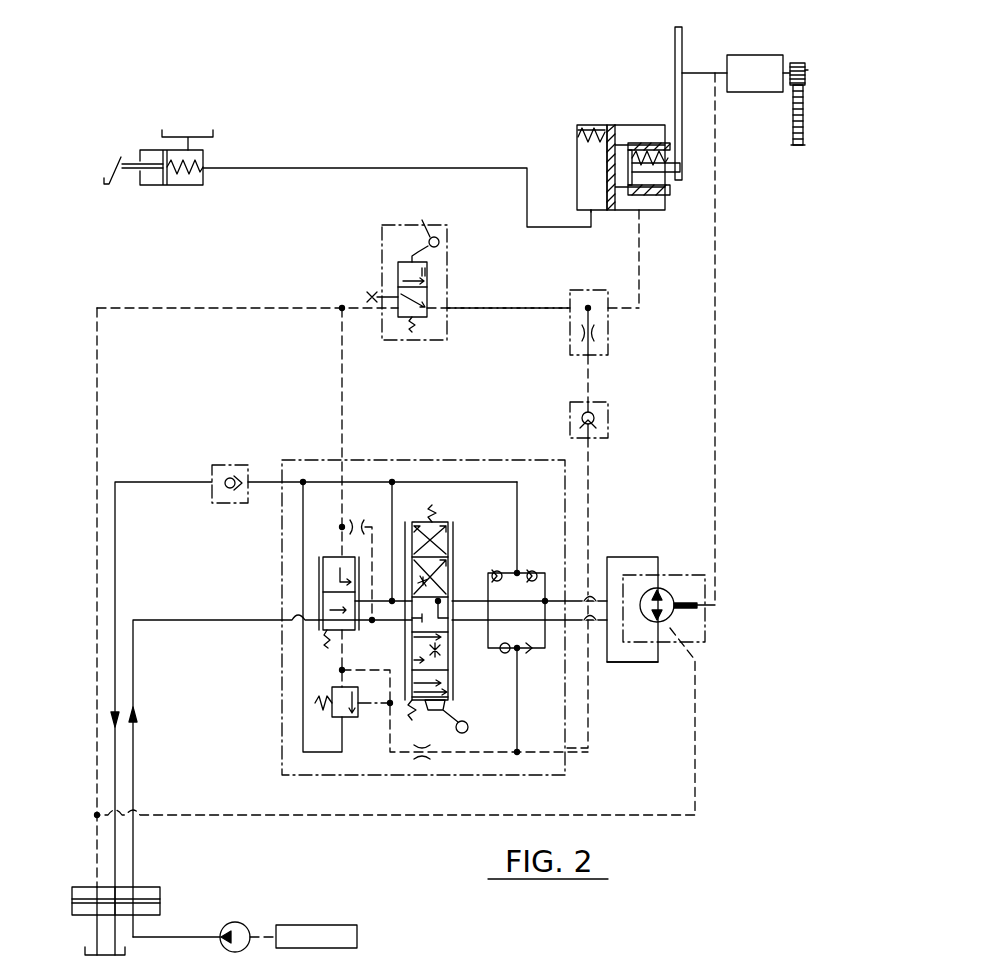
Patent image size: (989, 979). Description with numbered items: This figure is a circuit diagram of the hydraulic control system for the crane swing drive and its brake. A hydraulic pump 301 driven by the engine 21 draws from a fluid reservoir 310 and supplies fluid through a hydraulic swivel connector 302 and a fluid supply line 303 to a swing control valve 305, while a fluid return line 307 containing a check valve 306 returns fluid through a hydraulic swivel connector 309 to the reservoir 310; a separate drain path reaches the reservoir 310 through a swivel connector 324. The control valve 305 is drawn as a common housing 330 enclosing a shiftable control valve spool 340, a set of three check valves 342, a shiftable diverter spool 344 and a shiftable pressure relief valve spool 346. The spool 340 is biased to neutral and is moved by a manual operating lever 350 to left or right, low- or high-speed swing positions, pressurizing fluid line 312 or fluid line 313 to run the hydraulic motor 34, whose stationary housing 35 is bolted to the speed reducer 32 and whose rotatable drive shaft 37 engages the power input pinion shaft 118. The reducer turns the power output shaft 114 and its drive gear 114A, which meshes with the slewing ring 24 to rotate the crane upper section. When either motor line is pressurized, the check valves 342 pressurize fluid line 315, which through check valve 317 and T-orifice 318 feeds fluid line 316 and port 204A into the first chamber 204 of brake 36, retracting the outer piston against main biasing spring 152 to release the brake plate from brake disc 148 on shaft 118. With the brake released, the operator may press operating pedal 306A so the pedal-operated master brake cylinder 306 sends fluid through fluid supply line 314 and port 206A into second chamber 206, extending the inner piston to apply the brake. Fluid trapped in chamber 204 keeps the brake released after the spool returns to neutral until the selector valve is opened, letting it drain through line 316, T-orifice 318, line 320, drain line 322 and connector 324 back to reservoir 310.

The operating pedal 306A is at (116, 162).
The pedal-operated master brake cylinder 306 is at (205, 157).
The fluid supply line 314 is at (351, 166).
The second chamber 206 is at (580, 155).
The brake 36 is at (590, 125).
The main biasing spring 152 is at (580, 136).
The first chamber 204 is at (640, 132).
The brake disc 148 is at (676, 86).
The power input pinion shaft 118 is at (697, 72).
The speed reducer 32 is at (748, 55).
The power output shaft 114 is at (792, 62).
The drive gear 114A is at (808, 68).
The slewing ring 24 is at (805, 116).
The port 206A is at (593, 212).
The port 204A is at (640, 212).
The drain line 322 is at (262, 308).
The line 320 is at (550, 308).
The fluid line 316 is at (608, 308).
The T-orifice 318 is at (608, 339).
The fluid line 315 is at (595, 380).
The check valve 317 is at (608, 418).
The common housing 330 is at (503, 442).
The fluid return line 307 is at (115, 585).
The fluid supply line 303 is at (135, 742).
The shiftable diverter spool 344 is at (350, 632).
The shiftable pressure relief valve spool 346 is at (347, 718).
The shiftable control valve spool 340 is at (456, 548).
The manual operating lever 350 is at (467, 724).
The set of three check valves 342 is at (527, 568).
The fluid line 312 is at (620, 557).
The hydraulic motor 34 is at (705, 640).
The stationary housing 35 is at (666, 590).
The rotatable drive shaft 37 is at (700, 612).
The fluid line 313 is at (625, 663).
The swing control valve 305 is at (566, 773).
The hydraulic swivel connector 302 is at (138, 898).
The swivel connector 324 is at (93, 897).
The hydraulic swivel connector 309 is at (117, 897).
The fluid reservoir 310 is at (85, 948).
The hydraulic pump 301 is at (244, 923).
The engine 21 is at (350, 925).